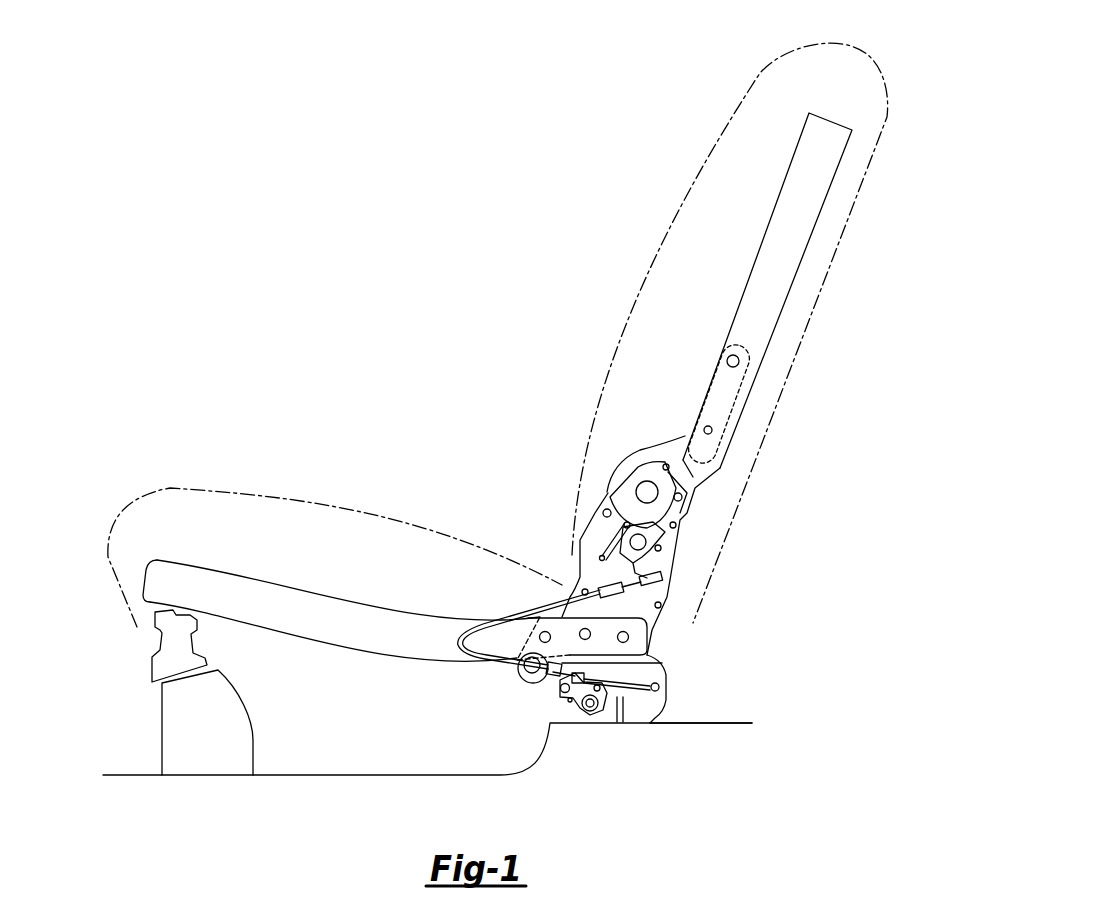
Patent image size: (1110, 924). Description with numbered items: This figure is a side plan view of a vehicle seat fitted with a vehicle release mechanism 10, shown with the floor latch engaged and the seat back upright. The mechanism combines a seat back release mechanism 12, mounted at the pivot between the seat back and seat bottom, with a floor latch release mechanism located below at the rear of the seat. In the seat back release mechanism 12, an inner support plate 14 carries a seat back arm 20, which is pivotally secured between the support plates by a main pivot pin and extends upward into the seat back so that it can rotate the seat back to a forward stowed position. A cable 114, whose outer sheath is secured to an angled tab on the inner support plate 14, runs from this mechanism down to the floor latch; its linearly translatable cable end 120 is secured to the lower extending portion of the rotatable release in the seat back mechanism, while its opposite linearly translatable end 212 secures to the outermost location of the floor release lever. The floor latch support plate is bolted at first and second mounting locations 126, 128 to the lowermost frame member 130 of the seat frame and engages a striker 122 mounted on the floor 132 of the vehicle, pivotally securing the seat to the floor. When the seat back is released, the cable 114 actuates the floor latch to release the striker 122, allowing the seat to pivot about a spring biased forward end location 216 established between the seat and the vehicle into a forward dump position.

The vehicle release mechanism 10 is at (445, 293).
The seat back release mechanism 12 is at (545, 706).
The inner support plate 14 is at (571, 556).
The seat back arm 20 is at (663, 450).
The cable 114 is at (478, 660).
The linearly translatable cable end 120 is at (660, 588).
The striker 122 is at (603, 723).
The first mounting location 126 is at (658, 665).
The second mounting location 128 is at (648, 632).
The frame member 130 is at (453, 628).
The floor 132 is at (673, 720).
The linearly translatable end 212 is at (570, 700).
The spring biased forward end location 216 is at (157, 632).